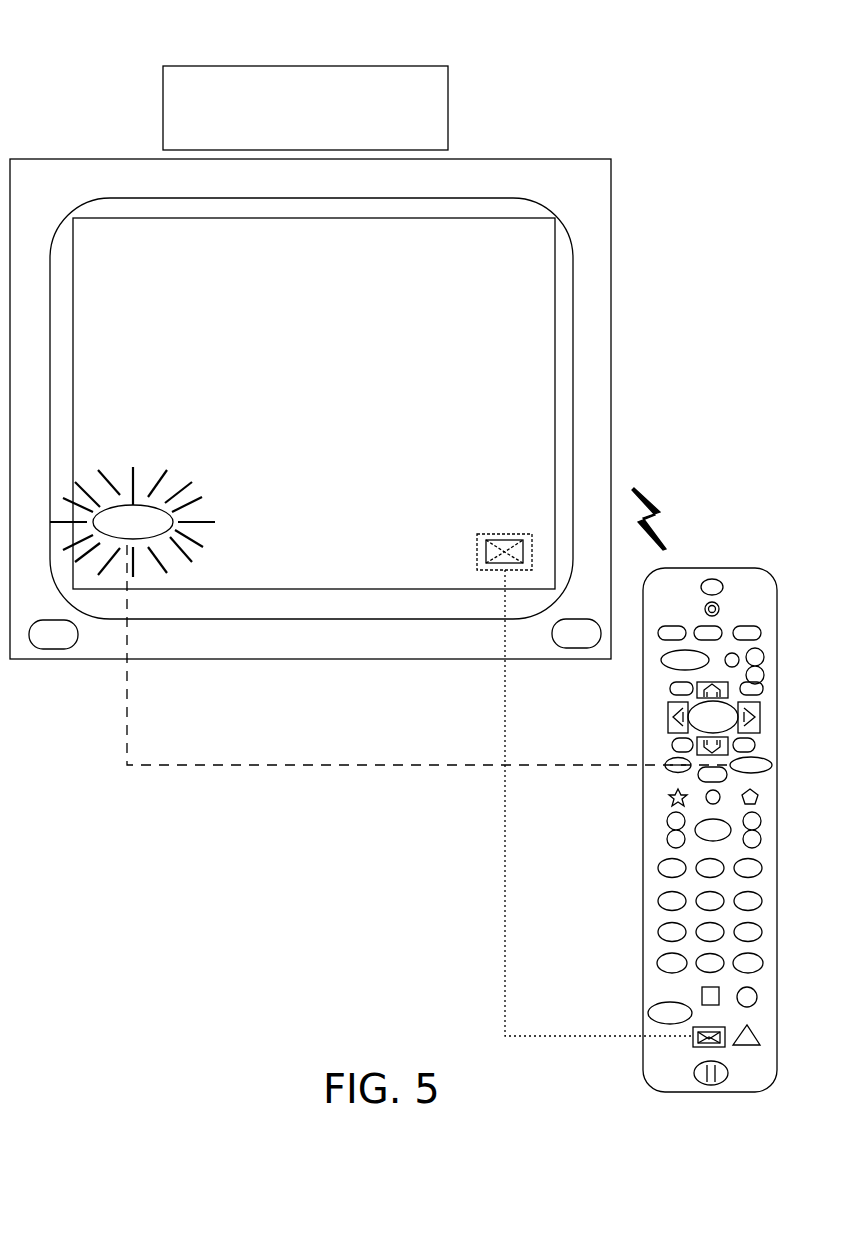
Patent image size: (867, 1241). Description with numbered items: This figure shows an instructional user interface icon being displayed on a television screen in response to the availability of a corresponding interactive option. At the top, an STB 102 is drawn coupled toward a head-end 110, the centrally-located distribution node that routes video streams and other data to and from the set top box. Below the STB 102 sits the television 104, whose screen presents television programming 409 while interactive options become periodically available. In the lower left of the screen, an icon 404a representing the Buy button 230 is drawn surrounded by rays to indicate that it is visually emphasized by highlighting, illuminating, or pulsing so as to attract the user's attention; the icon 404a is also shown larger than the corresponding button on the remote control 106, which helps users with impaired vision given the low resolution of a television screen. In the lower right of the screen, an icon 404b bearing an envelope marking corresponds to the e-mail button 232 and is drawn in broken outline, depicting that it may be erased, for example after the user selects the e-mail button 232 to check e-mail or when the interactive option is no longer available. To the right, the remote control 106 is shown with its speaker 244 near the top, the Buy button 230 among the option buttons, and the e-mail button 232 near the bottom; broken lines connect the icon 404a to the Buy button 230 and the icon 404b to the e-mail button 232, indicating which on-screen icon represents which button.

The head-end 110 is at (163, 107).
The STB 102 is at (305, 108).
The television 104 is at (612, 408).
The television programming 409 is at (314, 403).
The icon 404a is at (133, 503).
The icon 404b is at (477, 548).
The remote control 106 is at (643, 830).
The speaker 244 is at (712, 580).
The Buy button 230 is at (772, 765).
The e-mail button 232 is at (693, 1039).